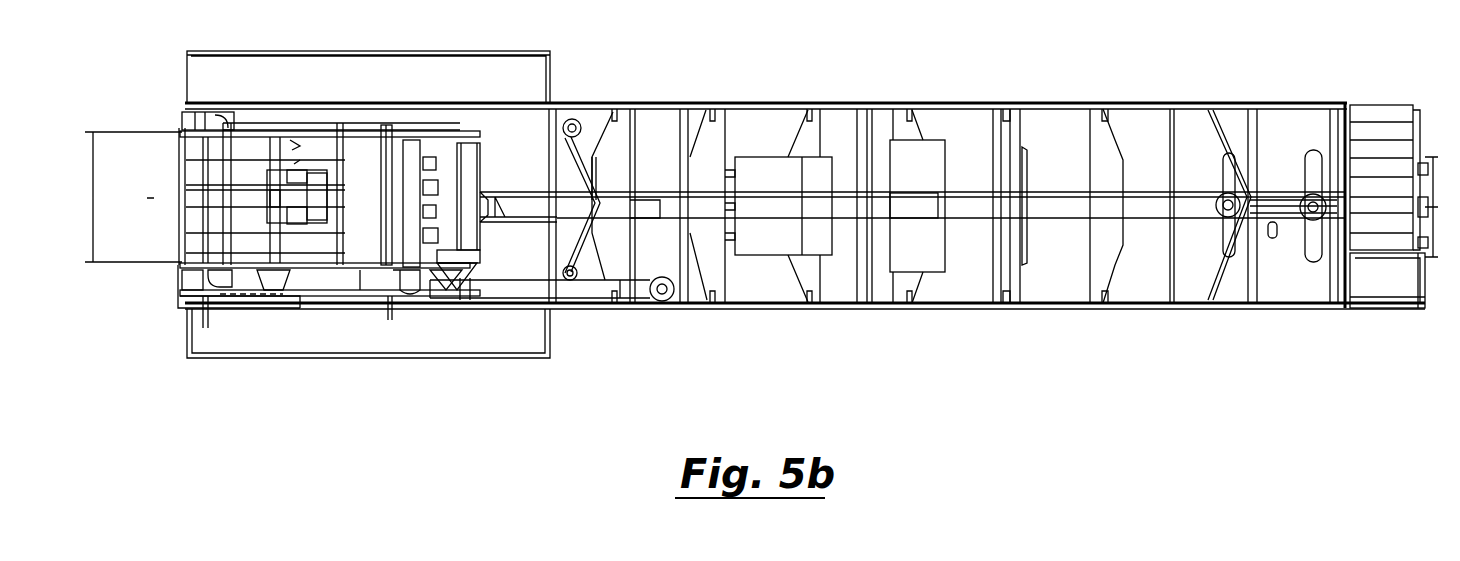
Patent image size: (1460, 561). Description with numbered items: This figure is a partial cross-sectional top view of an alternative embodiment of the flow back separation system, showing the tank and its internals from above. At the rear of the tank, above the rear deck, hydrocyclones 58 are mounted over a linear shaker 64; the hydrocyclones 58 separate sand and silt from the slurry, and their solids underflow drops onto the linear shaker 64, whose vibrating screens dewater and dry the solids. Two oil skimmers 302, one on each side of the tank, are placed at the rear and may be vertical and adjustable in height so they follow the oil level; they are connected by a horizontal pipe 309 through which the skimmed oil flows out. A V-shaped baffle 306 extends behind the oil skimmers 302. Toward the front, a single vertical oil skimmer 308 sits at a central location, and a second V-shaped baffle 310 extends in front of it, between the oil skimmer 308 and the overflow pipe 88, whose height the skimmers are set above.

The linear shaker 64 is at (162, 110).
The hydrocyclone 58 is at (454, 162).
The oil skimmer 302 is at (576, 128).
The baffle 306 is at (590, 183).
The horizontal pipe 309 is at (580, 279).
The baffle 310 is at (1190, 136).
The oil skimmer 308 is at (1218, 222).
The overflow pipe 88 is at (1300, 216).